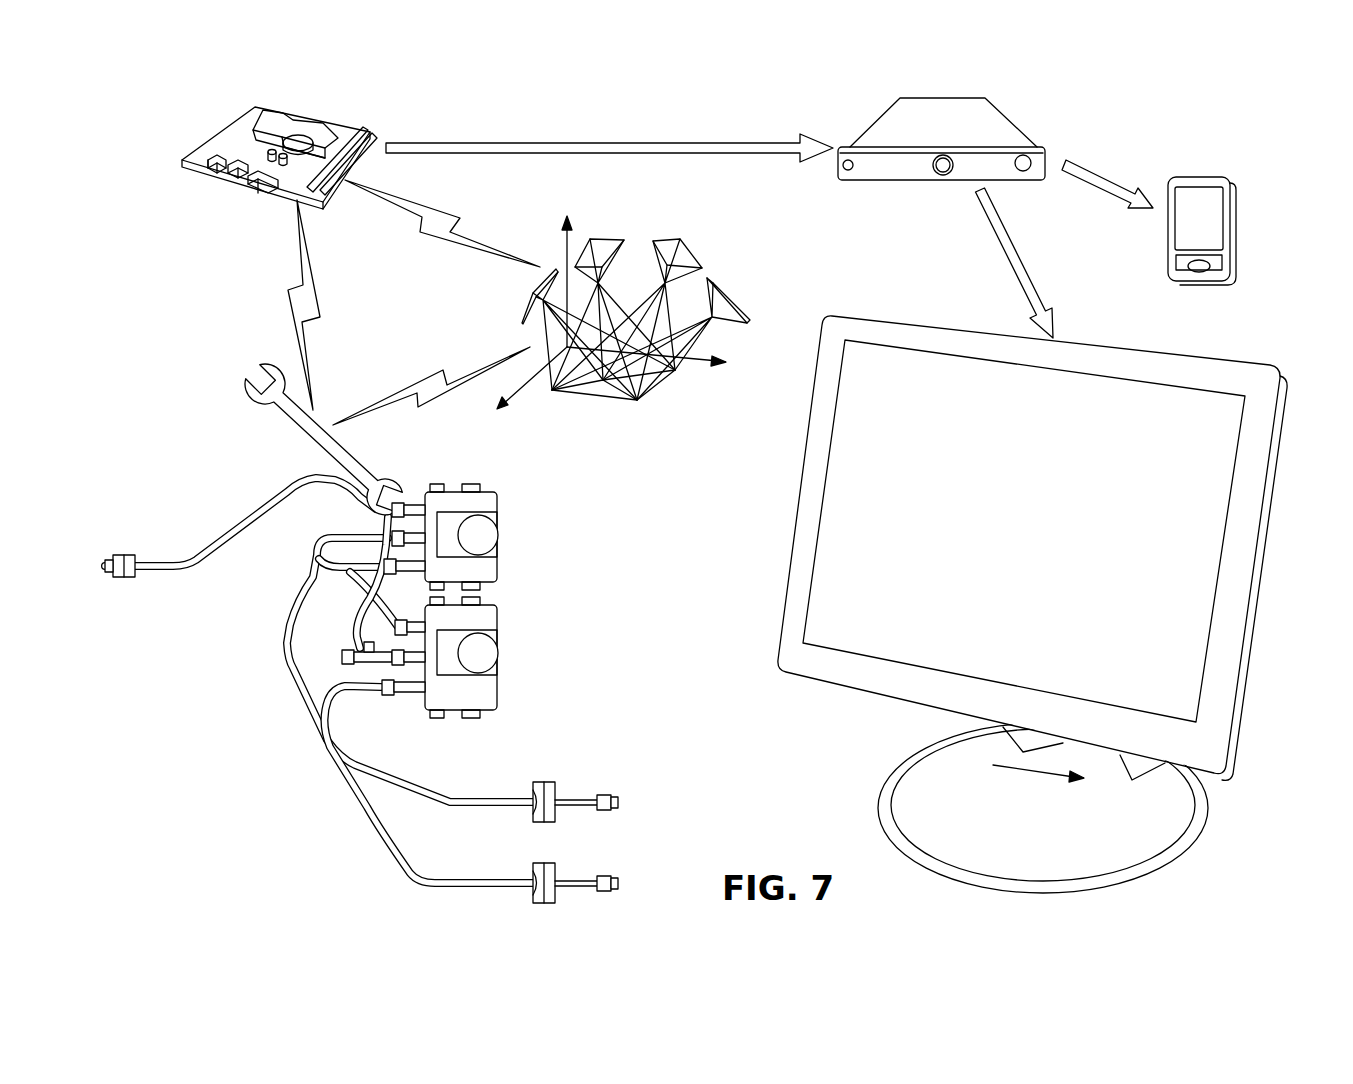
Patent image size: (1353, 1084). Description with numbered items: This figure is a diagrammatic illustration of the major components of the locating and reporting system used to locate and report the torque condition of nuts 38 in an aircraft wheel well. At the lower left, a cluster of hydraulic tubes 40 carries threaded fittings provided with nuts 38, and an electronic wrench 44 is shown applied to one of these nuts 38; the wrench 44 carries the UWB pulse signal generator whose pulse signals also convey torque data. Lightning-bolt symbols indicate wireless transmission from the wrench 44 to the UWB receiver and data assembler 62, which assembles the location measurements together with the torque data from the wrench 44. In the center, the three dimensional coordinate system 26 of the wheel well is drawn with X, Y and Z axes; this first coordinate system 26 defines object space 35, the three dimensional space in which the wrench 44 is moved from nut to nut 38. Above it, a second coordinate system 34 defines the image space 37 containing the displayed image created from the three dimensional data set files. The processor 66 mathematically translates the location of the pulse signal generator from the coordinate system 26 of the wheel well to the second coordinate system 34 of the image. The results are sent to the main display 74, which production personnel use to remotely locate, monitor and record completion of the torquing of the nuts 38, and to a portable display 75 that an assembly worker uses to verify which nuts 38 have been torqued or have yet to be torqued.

The three dimensional coordinate system 26 is at (543, 227).
The second coordinate system 34 is at (655, 227).
The object space 35 is at (578, 448).
The image space 37 is at (743, 228).
The nuts 38 is at (124, 578).
The hydraulic tubes 40 is at (221, 527).
The electronic wrench 44 is at (224, 375).
The UWB receiver and data assembler 62 is at (222, 182).
The processor 66 is at (900, 167).
The display 74 is at (843, 638).
The portable display 75 is at (1232, 203).